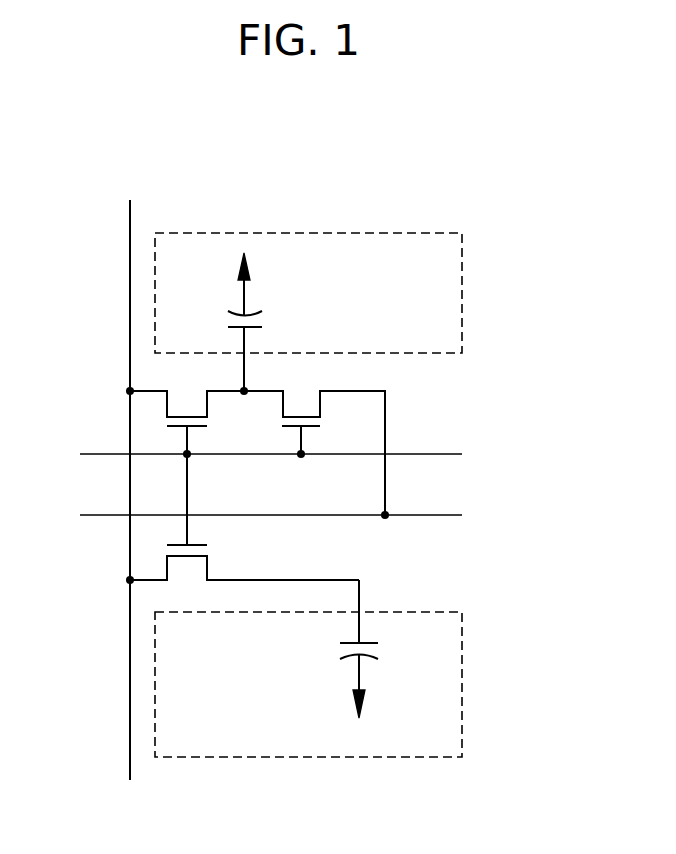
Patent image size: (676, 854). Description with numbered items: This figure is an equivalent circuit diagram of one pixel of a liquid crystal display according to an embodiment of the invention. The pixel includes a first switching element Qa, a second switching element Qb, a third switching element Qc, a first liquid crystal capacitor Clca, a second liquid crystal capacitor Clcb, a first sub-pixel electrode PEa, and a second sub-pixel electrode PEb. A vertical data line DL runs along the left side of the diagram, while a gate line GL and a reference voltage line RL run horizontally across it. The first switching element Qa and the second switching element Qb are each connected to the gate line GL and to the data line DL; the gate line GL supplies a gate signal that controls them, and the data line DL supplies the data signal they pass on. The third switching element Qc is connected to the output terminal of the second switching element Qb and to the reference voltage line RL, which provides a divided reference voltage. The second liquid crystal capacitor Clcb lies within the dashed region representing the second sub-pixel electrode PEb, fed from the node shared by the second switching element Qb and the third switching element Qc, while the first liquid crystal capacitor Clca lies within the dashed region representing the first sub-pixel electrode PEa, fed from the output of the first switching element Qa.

The data line DL is at (129, 476).
The gate line GL is at (254, 457).
The reference voltage line RL is at (254, 518).
The first switching element Qa is at (242, 531).
The second switching element Qb is at (185, 411).
The third switching element Qc is at (314, 442).
The first liquid crystal capacitor Clca is at (333, 649).
The second liquid crystal capacitor Clcb is at (268, 322).
The first sub-pixel electrode PEa is at (464, 693).
The second sub-pixel electrode PEb is at (464, 295).